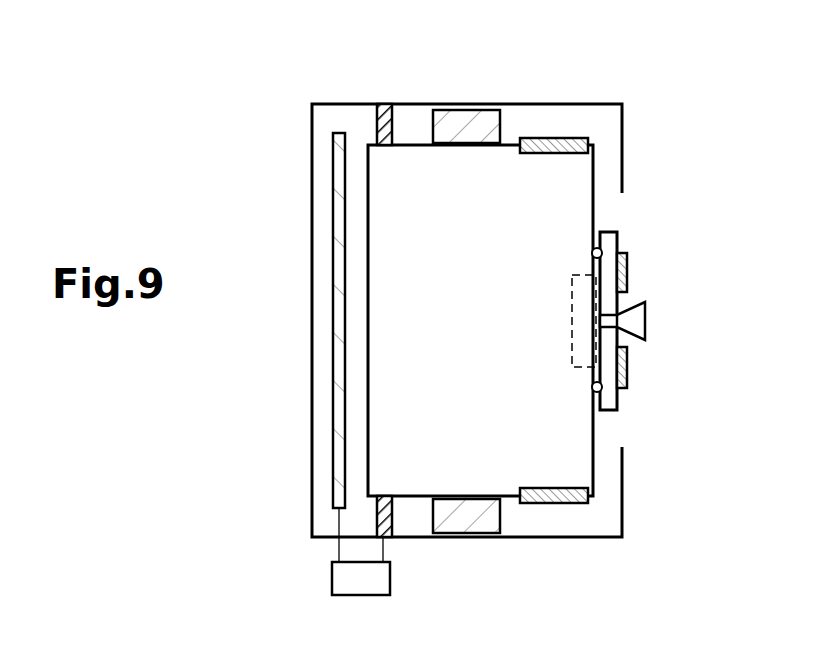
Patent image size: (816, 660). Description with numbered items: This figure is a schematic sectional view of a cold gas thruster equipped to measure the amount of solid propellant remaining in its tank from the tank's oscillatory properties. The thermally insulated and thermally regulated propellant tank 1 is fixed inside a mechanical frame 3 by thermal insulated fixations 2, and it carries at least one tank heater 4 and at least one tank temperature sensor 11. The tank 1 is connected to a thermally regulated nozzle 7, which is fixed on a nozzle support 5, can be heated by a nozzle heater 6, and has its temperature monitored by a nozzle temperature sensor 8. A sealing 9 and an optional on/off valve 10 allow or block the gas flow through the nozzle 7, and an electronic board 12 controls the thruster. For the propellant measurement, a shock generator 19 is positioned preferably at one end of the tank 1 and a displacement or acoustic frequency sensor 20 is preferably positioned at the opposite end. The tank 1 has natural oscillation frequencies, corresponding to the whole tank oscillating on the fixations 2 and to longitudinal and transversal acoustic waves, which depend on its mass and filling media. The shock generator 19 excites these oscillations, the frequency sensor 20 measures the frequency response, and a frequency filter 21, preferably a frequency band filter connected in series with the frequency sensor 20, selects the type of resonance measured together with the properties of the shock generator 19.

The propellant tank 1 is at (512, 144).
The thermal insulated fixations 2 is at (498, 518).
The mechanical frame 3 is at (312, 222).
The tank heater 4 is at (576, 505).
The nozzle support 5 is at (622, 413).
The nozzle heater 6 is at (627, 383).
The nozzle 7 is at (647, 325).
The nozzle temperature sensor 8 is at (627, 270).
The sealing 9 is at (590, 388).
The on/off valve 10 is at (570, 347).
The tank temperature sensor 11 is at (558, 158).
The electronic board 12 is at (333, 342).
The shock generator 19 is at (402, 118).
The frequency sensor 20 is at (395, 515).
The frequency filter 21 is at (390, 578).